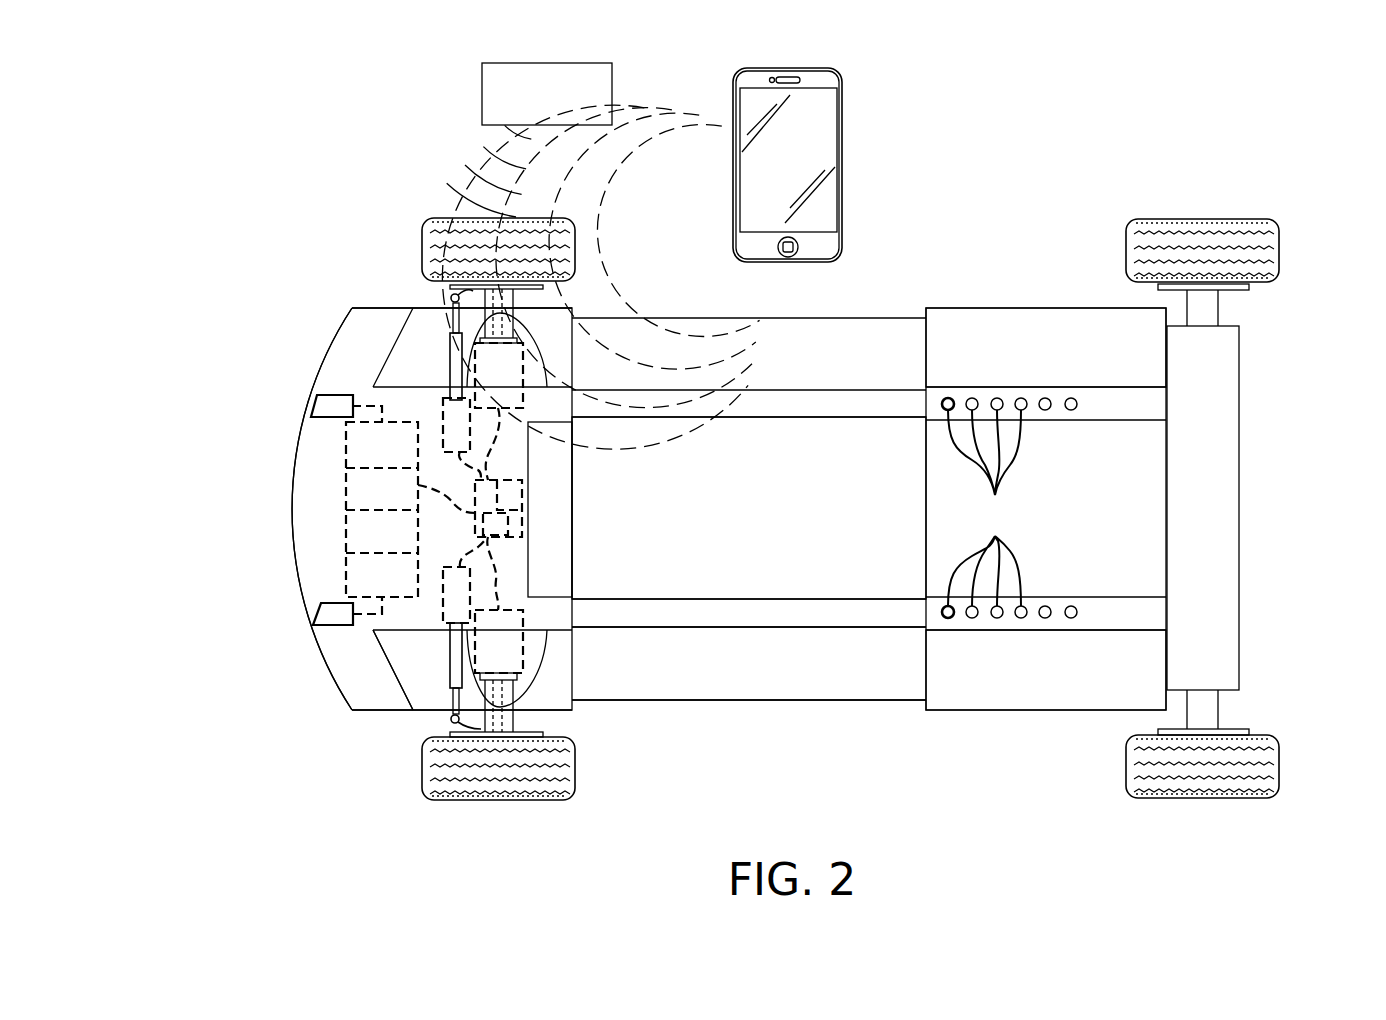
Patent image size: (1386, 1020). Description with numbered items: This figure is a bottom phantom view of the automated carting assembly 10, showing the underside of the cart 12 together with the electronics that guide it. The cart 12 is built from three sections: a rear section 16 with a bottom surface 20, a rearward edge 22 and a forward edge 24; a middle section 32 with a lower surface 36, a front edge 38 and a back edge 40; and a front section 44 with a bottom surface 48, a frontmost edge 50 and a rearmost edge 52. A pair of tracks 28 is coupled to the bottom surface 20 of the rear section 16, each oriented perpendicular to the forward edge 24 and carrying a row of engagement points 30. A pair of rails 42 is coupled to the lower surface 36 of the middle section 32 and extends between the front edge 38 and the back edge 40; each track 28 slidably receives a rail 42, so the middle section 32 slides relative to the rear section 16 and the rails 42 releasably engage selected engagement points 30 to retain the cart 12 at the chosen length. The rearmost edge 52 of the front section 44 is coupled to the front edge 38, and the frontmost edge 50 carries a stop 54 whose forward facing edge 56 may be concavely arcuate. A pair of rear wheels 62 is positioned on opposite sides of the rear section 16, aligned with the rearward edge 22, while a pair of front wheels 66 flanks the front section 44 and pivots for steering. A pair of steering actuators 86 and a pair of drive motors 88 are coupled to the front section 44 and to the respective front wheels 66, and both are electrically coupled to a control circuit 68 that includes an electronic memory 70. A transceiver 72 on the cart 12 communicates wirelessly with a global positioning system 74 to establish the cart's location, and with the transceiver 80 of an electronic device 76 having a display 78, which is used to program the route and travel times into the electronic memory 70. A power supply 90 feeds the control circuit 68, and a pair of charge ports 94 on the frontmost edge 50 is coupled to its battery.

The automated carting assembly 10 is at (318, 162).
The cart 12 is at (992, 752).
The rear section 16 is at (1022, 310).
The bottom surface 20 is at (941, 347).
The rearward edge 22 is at (1167, 436).
The forward edge 24 is at (925, 667).
The tracks 28 is at (1098, 394).
The engagement points 30 is at (984, 508).
The middle section 32 is at (778, 698).
The lower surface 36 is at (722, 668).
The front edge 38 is at (572, 672).
The back edge 40 is at (927, 648).
The rails 42 is at (832, 616).
The front section 44 is at (427, 711).
The bottom surface 48 is at (462, 723).
The frontmost edge 50 is at (375, 663).
The rearmost edge 52 is at (572, 358).
The stop 54 is at (372, 308).
The forward facing edge 56 is at (295, 498).
The rear wheels 62 is at (1215, 226).
The front wheels 66 is at (450, 219).
The control circuit 68 is at (498, 540).
The electronic memory 70 is at (502, 525).
The transceiver 72 is at (520, 481).
The global positioning system 74 is at (612, 80).
The electronic device 76 is at (842, 78).
The display 78 is at (817, 138).
The transceiver 80 is at (807, 173).
The steering actuators 86 is at (443, 420).
The drive motors 88 is at (487, 365).
The power supply 90 is at (347, 468).
The charge ports 94 is at (313, 400).